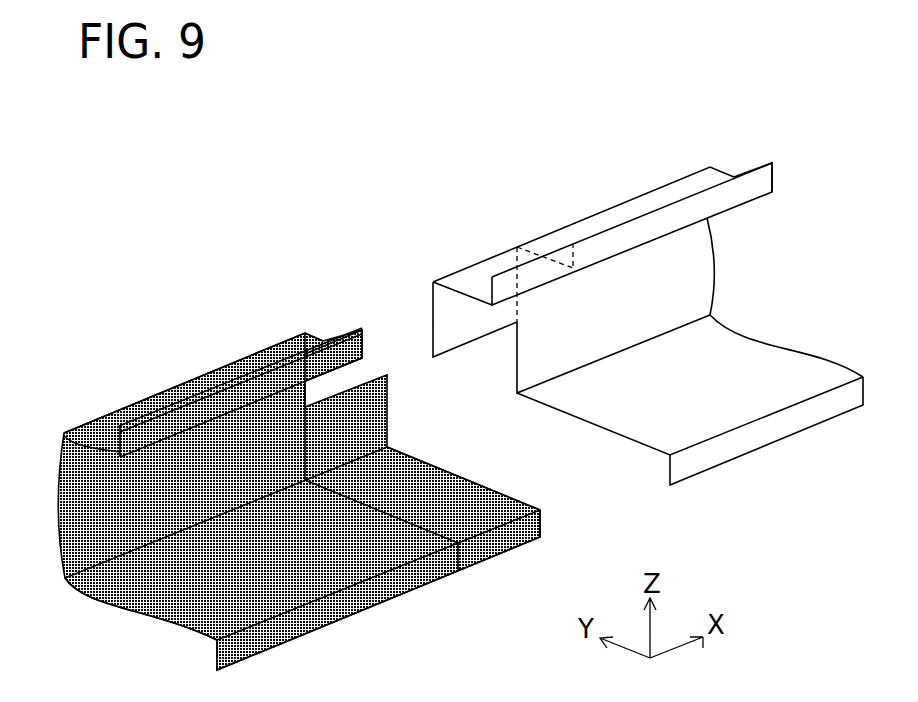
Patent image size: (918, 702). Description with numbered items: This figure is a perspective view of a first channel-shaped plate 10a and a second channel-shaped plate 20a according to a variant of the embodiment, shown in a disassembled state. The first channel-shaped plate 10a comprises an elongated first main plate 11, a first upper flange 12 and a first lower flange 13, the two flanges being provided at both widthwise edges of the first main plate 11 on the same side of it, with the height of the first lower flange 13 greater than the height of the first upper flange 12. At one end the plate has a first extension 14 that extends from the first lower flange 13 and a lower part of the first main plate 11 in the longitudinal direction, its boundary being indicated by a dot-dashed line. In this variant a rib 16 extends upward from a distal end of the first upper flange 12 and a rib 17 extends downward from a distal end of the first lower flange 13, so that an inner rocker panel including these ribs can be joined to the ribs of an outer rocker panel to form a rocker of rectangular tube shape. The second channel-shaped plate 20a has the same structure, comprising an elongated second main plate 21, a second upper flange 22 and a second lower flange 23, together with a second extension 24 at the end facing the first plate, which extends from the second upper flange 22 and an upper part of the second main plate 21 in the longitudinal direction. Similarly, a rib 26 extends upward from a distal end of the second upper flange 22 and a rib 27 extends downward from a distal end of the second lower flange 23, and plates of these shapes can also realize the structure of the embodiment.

The first channel-shaped plate 10a is at (115, 399).
The first main plate 11 is at (58, 493).
The first upper flange 12 is at (196, 377).
The first lower flange 13 is at (120, 606).
The first extension 14 is at (548, 546).
The rib 16 is at (354, 332).
The rib 17 is at (377, 610).
The second channel-shaped plate 20a is at (583, 200).
The second main plate 21 is at (718, 262).
The second upper flange 22 is at (693, 171).
The second lower flange 23 is at (806, 352).
The second extension 24 is at (510, 241).
The rib 26 is at (776, 180).
The rib 27 is at (748, 445).